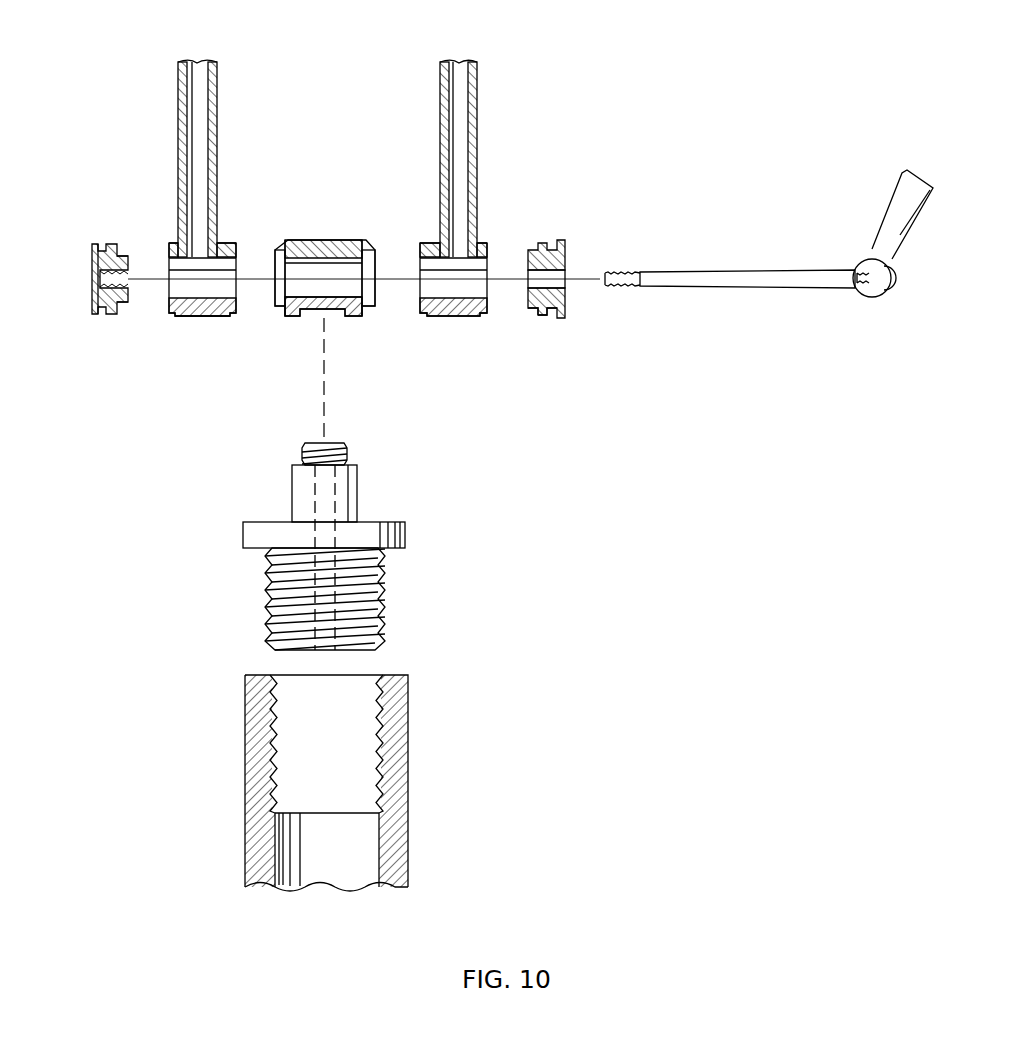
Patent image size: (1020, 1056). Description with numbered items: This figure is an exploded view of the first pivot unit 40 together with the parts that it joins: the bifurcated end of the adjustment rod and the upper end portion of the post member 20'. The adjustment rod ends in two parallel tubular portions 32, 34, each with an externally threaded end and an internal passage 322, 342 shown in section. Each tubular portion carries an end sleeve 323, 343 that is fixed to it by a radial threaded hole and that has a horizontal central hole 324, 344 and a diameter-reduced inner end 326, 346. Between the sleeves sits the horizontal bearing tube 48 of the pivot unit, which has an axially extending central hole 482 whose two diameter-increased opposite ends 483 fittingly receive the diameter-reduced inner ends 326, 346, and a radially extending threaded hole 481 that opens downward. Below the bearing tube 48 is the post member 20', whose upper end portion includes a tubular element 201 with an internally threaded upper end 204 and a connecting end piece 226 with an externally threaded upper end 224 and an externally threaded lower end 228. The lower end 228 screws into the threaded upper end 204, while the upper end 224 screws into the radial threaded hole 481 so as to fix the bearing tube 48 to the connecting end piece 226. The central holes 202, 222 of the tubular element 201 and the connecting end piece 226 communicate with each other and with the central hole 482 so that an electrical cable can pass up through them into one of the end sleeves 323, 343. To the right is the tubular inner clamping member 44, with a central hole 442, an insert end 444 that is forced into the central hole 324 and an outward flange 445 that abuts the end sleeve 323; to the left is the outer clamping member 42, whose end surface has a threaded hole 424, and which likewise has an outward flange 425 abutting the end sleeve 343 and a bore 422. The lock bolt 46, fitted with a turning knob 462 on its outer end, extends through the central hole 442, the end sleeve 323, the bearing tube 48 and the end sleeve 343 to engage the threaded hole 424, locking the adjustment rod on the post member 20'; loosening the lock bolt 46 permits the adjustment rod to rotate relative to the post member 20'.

The first pivot unit 40 is at (665, 150).
The outer clamping member 42 is at (92, 262).
The threaded hole 422 is at (127, 300).
The threaded hole 424 is at (125, 258).
The outward flange 425 is at (110, 250).
The tubular portion 34 is at (222, 86).
The pipe passage 342 is at (203, 126).
The end sleeve 343 is at (193, 318).
The horizontal central hole 344 is at (207, 294).
The diameter-reduced inner end 346 is at (228, 250).
The horizontal bearing tube 48 is at (318, 240).
The radially extending threaded hole 481 is at (325, 318).
The axially extending central hole 482 is at (330, 278).
The diameter-increased opposite ends 483 is at (282, 300).
The tubular portion 32 is at (493, 85).
The pipe passage 322 is at (463, 128).
The end sleeve 323 is at (458, 316).
The horizontal central hole 324 is at (470, 273).
The diameter-reduced inner end 326 is at (425, 253).
The tubular inner clamping member 44 is at (565, 245).
The central hole 442 is at (565, 280).
The insert end 444 is at (535, 318).
The outward flange 445 is at (545, 312).
The lock bolt 46 is at (744, 266).
The turning knob 462 is at (898, 232).
The central hole 222 is at (333, 497).
The externally threaded upper end 224 is at (302, 446).
The connecting end piece 226 is at (395, 535).
The externally threaded lower end 228 is at (385, 612).
The post member 20' is at (394, 765).
The tubular element 201 is at (408, 845).
The central hole 202 is at (330, 738).
The internally threaded upper end 204 is at (365, 708).